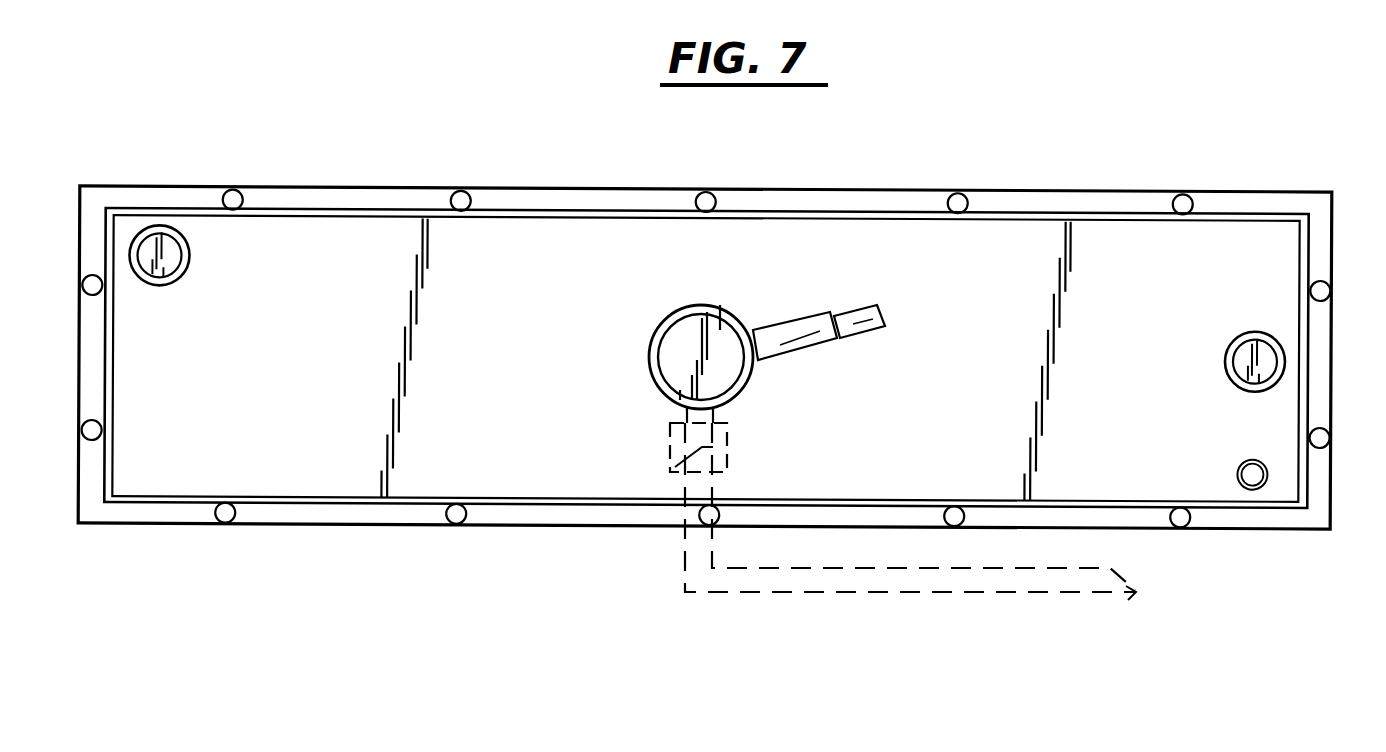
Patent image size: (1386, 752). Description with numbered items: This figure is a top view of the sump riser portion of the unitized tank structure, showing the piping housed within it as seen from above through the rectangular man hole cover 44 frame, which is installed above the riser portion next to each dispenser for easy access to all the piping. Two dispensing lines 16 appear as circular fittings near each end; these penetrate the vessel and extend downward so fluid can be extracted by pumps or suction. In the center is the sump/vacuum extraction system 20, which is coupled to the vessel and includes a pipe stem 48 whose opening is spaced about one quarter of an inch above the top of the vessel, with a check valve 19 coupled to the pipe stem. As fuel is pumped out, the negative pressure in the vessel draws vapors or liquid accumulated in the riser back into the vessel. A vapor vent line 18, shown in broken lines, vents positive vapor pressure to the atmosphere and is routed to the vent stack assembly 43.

The dispensing line 16 is at (130, 256).
The vapor vent line 18 is at (947, 595).
The check valve 19 is at (812, 318).
The sump/vacuum extraction system 20 is at (658, 391).
The vent stack assembly 43 is at (727, 452).
The man hole cover 44 is at (706, 373).
The pipe stem 48 is at (874, 328).